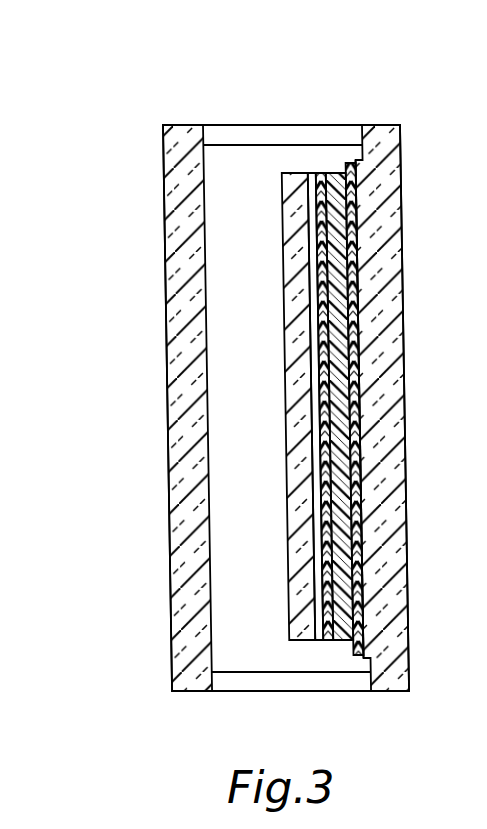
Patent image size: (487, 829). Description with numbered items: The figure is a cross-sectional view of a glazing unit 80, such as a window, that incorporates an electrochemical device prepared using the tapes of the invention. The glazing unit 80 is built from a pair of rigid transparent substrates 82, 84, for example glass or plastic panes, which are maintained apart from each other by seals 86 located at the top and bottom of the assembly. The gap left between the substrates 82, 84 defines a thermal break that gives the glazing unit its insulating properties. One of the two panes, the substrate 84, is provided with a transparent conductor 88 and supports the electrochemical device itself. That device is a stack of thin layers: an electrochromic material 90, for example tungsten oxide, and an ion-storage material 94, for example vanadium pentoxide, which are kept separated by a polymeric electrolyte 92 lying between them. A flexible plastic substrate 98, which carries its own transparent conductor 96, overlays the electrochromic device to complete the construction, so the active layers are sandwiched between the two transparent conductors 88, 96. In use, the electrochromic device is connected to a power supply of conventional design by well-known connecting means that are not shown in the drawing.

The glazing unit 80 is at (403, 88).
The rigid transparent substrate 82 is at (168, 440).
The rigid transparent substrate 84 is at (407, 508).
The seals 86 is at (215, 126).
The transparent conductor 88 is at (358, 162).
The electrochromic material 90 is at (358, 656).
The polymeric electrolyte 92 is at (337, 172).
The ion-storage material 94 is at (329, 641).
The transparent conductor 96 is at (309, 174).
The flexible plastic substrate 98 is at (290, 596).